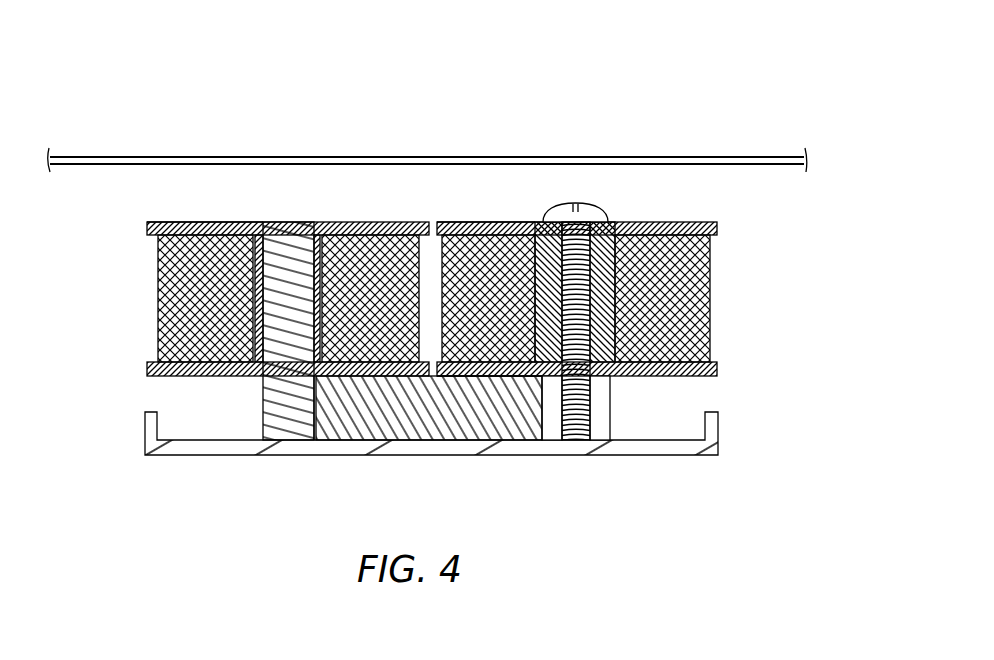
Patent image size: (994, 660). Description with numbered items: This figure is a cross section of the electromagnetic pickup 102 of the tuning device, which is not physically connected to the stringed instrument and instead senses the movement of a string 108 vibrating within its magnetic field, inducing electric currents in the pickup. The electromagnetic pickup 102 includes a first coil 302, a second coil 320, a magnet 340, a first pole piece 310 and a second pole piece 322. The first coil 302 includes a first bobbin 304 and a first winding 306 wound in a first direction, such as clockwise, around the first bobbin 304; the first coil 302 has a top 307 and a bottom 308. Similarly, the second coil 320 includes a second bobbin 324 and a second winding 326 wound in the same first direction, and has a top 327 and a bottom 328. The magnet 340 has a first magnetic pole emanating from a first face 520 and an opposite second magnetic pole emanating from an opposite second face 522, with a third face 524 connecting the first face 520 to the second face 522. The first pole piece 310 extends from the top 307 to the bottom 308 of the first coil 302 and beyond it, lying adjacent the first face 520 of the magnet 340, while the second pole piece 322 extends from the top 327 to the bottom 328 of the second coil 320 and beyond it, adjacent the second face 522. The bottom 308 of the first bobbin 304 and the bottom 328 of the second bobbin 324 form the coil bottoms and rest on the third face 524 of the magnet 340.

The string 108 is at (166, 157).
The electromagnetic pickup 102 is at (431, 217).
The second coil 320 is at (196, 218).
The second pole piece 322 is at (272, 221).
The second bobbin 324 is at (150, 229).
The second winding 326 is at (174, 288).
The top of the second coil 327 is at (154, 222).
The bottom of the second coil 328 is at (176, 377).
The first coil 302 is at (637, 218).
The first bobbin 304 is at (683, 222).
The first winding 306 is at (676, 320).
The top of the first coil 307 is at (507, 221).
The bottom of the first coil 308 is at (683, 376).
The first pole piece 310 is at (562, 205).
The magnet 340 is at (391, 416).
The first face 520 is at (550, 427).
The second face 522 is at (306, 427).
The third face 524 is at (486, 376).